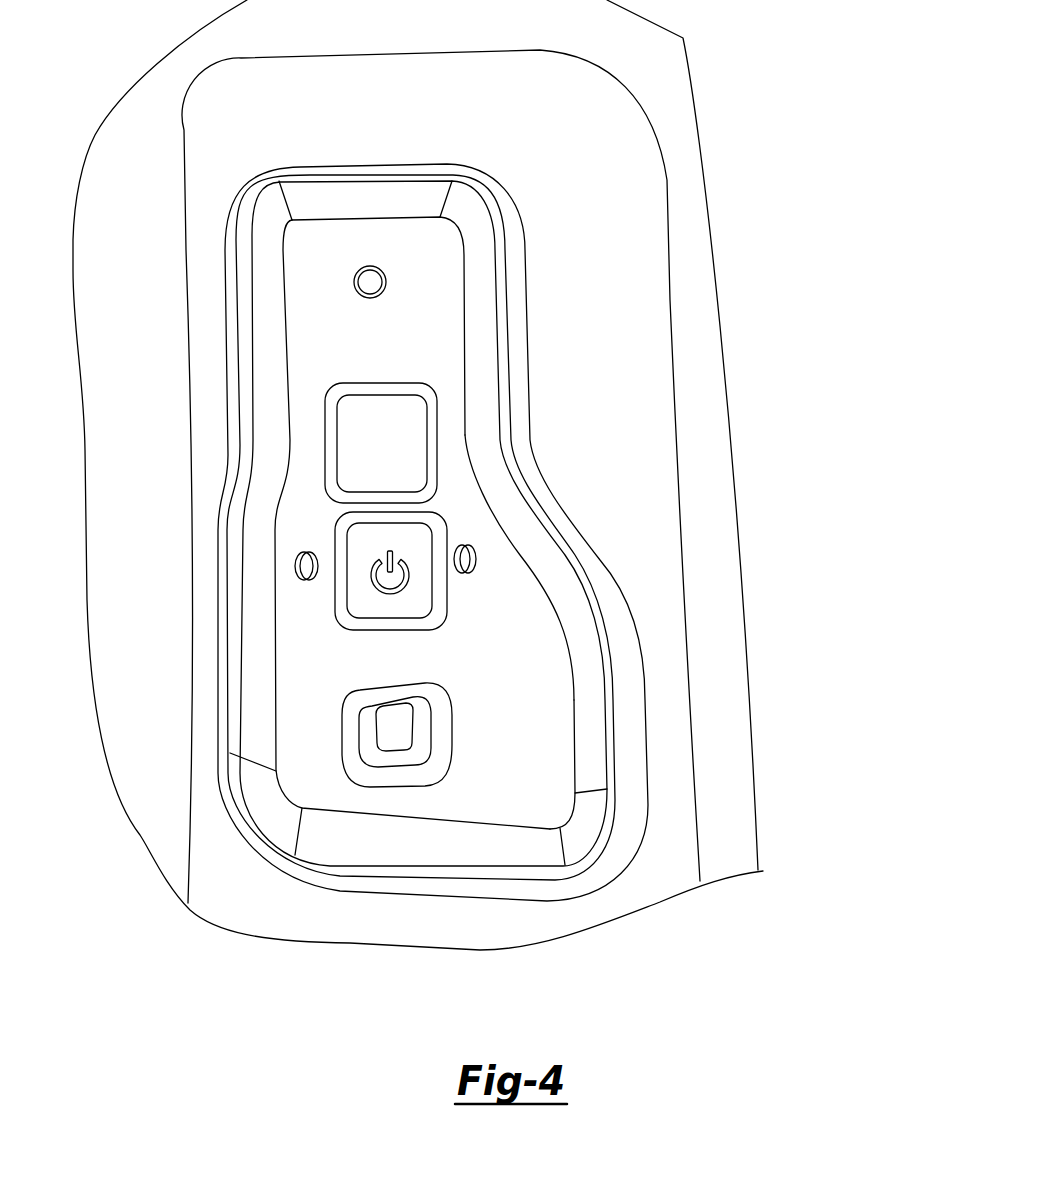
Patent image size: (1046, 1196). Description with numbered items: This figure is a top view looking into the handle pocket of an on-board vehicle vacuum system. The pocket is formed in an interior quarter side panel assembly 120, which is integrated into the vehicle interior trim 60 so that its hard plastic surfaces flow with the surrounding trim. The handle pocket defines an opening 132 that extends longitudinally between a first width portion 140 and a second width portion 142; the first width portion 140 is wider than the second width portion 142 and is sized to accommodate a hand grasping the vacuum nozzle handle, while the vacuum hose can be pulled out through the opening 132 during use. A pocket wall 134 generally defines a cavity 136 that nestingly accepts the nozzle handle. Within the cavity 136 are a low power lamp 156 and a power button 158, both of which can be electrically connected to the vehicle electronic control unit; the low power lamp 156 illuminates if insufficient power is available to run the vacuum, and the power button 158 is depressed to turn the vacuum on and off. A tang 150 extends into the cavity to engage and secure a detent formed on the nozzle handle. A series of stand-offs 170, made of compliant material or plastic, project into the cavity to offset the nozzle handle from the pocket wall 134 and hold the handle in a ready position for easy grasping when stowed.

The interior trim 60 is at (607, 333).
The interior quarter side panel assembly 120 is at (619, 129).
The opening 132 is at (320, 790).
The pocket wall 134 is at (542, 596).
The cavity 136 is at (547, 675).
The first width portion 140 is at (234, 700).
The second width portion 142 is at (233, 303).
The tang 150 is at (408, 735).
The low power lamp 156 is at (391, 408).
The power button 158 is at (395, 603).
The stand-offs 170 is at (370, 283).